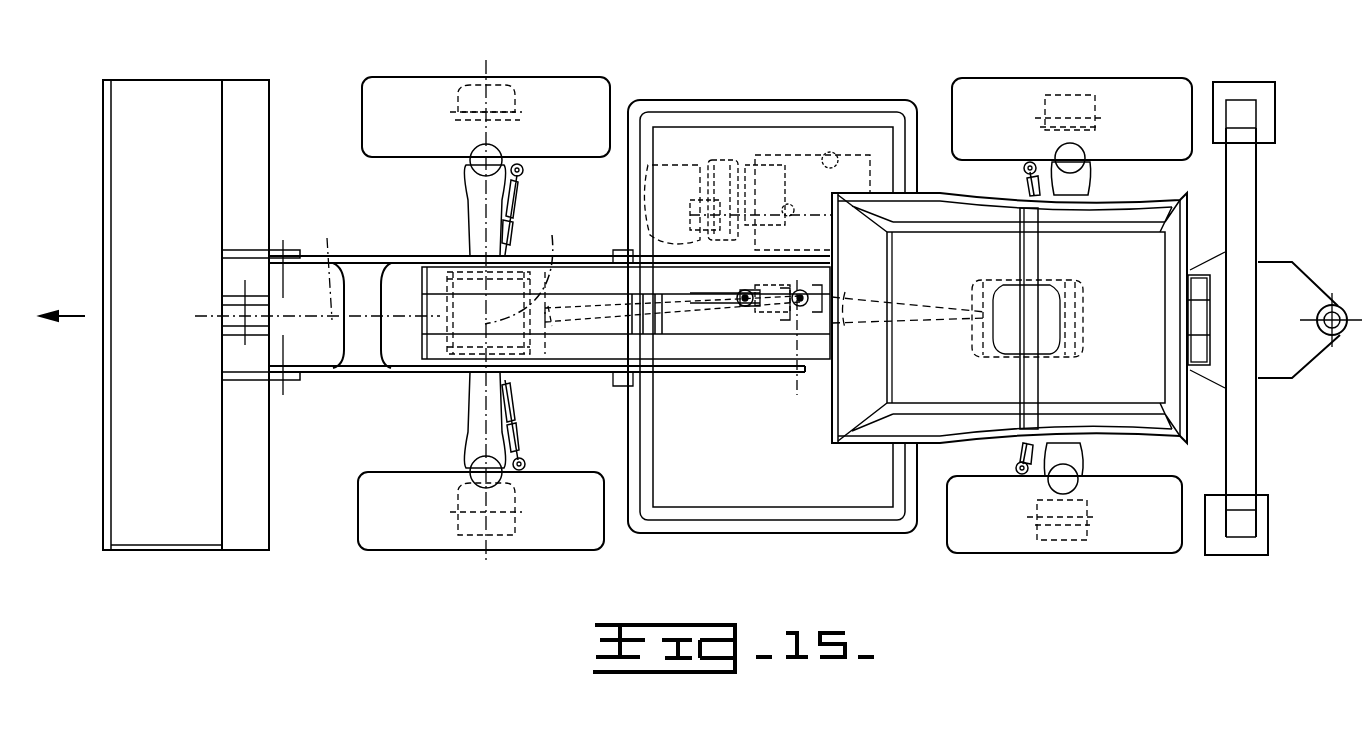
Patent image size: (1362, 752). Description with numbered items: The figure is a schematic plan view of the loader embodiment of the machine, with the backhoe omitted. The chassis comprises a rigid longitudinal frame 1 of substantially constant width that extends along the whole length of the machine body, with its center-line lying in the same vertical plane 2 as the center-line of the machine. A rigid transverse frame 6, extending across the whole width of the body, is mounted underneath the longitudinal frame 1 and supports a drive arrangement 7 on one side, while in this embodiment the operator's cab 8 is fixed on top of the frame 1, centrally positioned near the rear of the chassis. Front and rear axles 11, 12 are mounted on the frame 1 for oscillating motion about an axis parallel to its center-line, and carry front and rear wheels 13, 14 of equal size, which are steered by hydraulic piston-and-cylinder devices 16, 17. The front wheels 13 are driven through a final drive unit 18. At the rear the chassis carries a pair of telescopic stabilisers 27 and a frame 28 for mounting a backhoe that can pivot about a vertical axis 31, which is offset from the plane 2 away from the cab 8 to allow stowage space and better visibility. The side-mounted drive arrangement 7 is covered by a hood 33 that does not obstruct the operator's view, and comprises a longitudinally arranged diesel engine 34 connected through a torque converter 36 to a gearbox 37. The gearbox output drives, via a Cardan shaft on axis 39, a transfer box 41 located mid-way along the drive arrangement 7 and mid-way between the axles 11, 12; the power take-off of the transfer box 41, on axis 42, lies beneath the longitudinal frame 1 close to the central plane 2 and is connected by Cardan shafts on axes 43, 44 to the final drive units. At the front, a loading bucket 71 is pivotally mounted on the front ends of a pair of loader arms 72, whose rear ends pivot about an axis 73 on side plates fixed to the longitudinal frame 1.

The longitudinal frame 1 is at (588, 375).
The vertical plane 2 is at (327, 238).
The transverse frame 6 is at (641, 103).
The drive arrangement 7 is at (779, 128).
The operator's cab 8 is at (1187, 428).
The front axle 11 is at (475, 216).
The rear axle 12 is at (1080, 196).
The front wheels 13 is at (400, 78).
The rear wheels 14 is at (1128, 82).
The hydraulic piston-and-cylinder device 16 is at (520, 200).
The hydraulic piston-and-cylinder device 17 is at (1030, 194).
The final drive unit 18 is at (550, 255).
The telescopic stabilisers 27 is at (1268, 118).
The frame 28 is at (1298, 272).
The vertical axis 31 is at (1340, 340).
The hood 33 is at (903, 105).
The diesel engine 34 is at (805, 150).
The torque converter 36 is at (750, 165).
The gearbox 37 is at (680, 180).
The Cardan shaft axis 39 is at (723, 165).
The transfer box 41 is at (748, 335).
The power take-off axis 42 is at (745, 340).
The Cardan shaft axis 43 is at (670, 335).
The Cardan shaft axis 44 is at (942, 315).
The loading bucket 71 is at (137, 545).
The arms 72 is at (368, 256).
The axis 73 is at (776, 378).